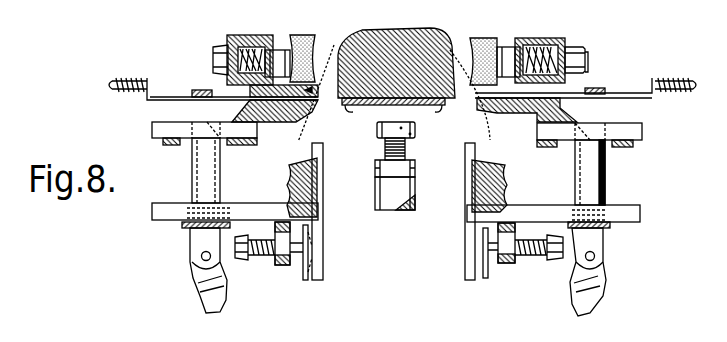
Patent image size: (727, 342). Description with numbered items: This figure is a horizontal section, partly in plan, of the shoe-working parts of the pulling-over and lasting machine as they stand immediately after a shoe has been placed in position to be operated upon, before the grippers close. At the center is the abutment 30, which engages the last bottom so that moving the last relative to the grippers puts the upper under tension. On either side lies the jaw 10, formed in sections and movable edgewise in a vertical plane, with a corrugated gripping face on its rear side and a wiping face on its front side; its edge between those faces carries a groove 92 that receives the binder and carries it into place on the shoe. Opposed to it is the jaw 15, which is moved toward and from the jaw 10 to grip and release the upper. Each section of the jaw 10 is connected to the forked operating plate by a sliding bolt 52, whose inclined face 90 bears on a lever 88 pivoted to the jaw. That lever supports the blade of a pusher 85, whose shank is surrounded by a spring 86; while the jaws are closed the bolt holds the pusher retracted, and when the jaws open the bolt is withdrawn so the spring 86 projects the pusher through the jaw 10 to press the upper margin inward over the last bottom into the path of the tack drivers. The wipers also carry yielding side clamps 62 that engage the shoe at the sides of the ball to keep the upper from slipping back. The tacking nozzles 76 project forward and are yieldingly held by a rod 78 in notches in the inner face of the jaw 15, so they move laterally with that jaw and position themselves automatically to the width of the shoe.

The jaw 10 is at (497, 117).
The jaw 15 is at (505, 180).
The abutment 30 is at (370, 157).
The bolt 52 is at (192, 163).
The side clamps 62 is at (306, 37).
The nozzles 76 is at (320, 278).
The rod 78 is at (297, 250).
The pushers 85 is at (167, 95).
The spring 86 is at (118, 78).
The lever 88 is at (193, 90).
The inclined face 90 is at (217, 115).
The groove 92 is at (329, 43).